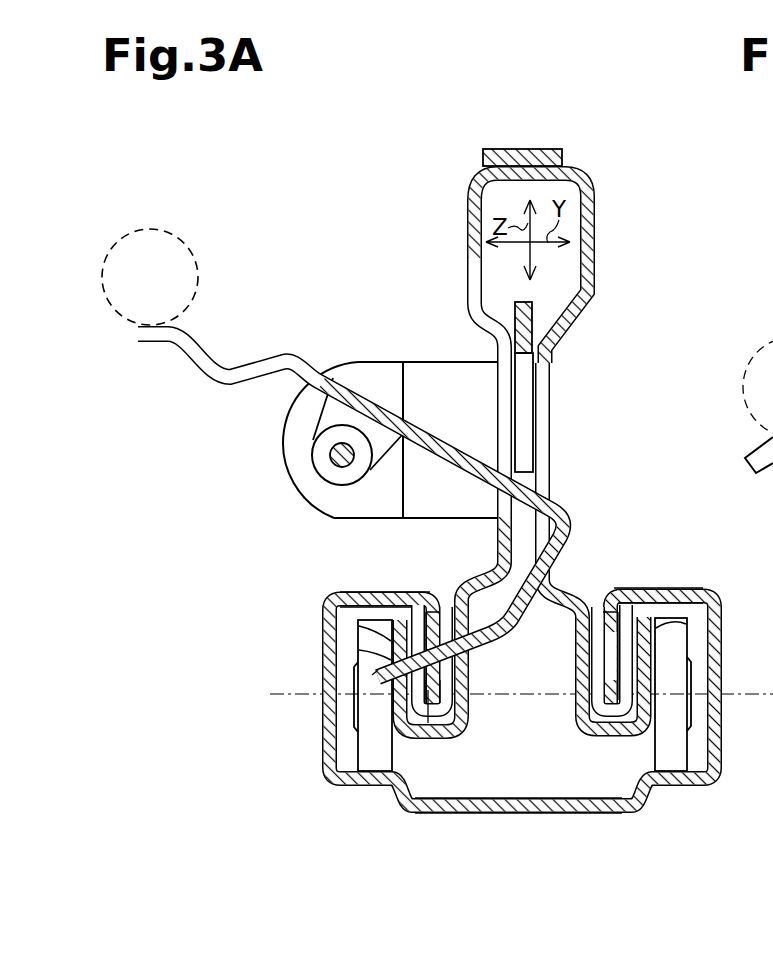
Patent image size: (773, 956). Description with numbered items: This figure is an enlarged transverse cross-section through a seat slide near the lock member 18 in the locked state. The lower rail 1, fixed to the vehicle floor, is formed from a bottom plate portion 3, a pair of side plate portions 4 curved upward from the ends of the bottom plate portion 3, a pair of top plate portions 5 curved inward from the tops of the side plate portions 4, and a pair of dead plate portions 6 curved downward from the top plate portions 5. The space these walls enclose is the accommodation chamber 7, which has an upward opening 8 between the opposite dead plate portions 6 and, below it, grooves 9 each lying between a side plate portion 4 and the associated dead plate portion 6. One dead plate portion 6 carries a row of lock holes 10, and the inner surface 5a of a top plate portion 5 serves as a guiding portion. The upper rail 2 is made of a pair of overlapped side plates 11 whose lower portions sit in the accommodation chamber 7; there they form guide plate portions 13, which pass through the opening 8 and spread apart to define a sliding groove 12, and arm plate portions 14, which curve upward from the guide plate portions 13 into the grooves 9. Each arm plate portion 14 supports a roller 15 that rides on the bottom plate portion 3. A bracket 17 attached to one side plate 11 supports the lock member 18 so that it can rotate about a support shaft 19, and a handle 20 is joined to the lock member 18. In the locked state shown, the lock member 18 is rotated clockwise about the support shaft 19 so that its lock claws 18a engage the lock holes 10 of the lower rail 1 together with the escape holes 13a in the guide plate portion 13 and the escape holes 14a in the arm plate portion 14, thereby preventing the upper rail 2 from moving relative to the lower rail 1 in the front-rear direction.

The lower rail 1 is at (524, 709).
The upper rail 2 is at (552, 143).
The bottom plate portion 3 is at (524, 730).
The side plate portion 4 is at (331, 746).
The top plate portion 5 is at (397, 594).
The inner surface 5a is at (366, 606).
The dead plate portion 6 is at (428, 616).
The accommodation chamber 7 is at (492, 806).
The opening 8 is at (458, 600).
The groove 9 is at (352, 712).
The lock hole 10 is at (428, 724).
The side plate 11 is at (457, 223).
The sliding groove 12 is at (562, 582).
The guide plate portion 13 is at (455, 688).
The escape hole 13a is at (471, 655).
The arm plate portion 14 is at (377, 625).
The escape hole 14a is at (387, 657).
The roller 15 is at (385, 765).
The bracket 17 is at (361, 440).
The lock member 18 is at (576, 496).
The lock claw 18a is at (375, 673).
The support shaft 19 is at (346, 464).
The handle 20 is at (150, 228).